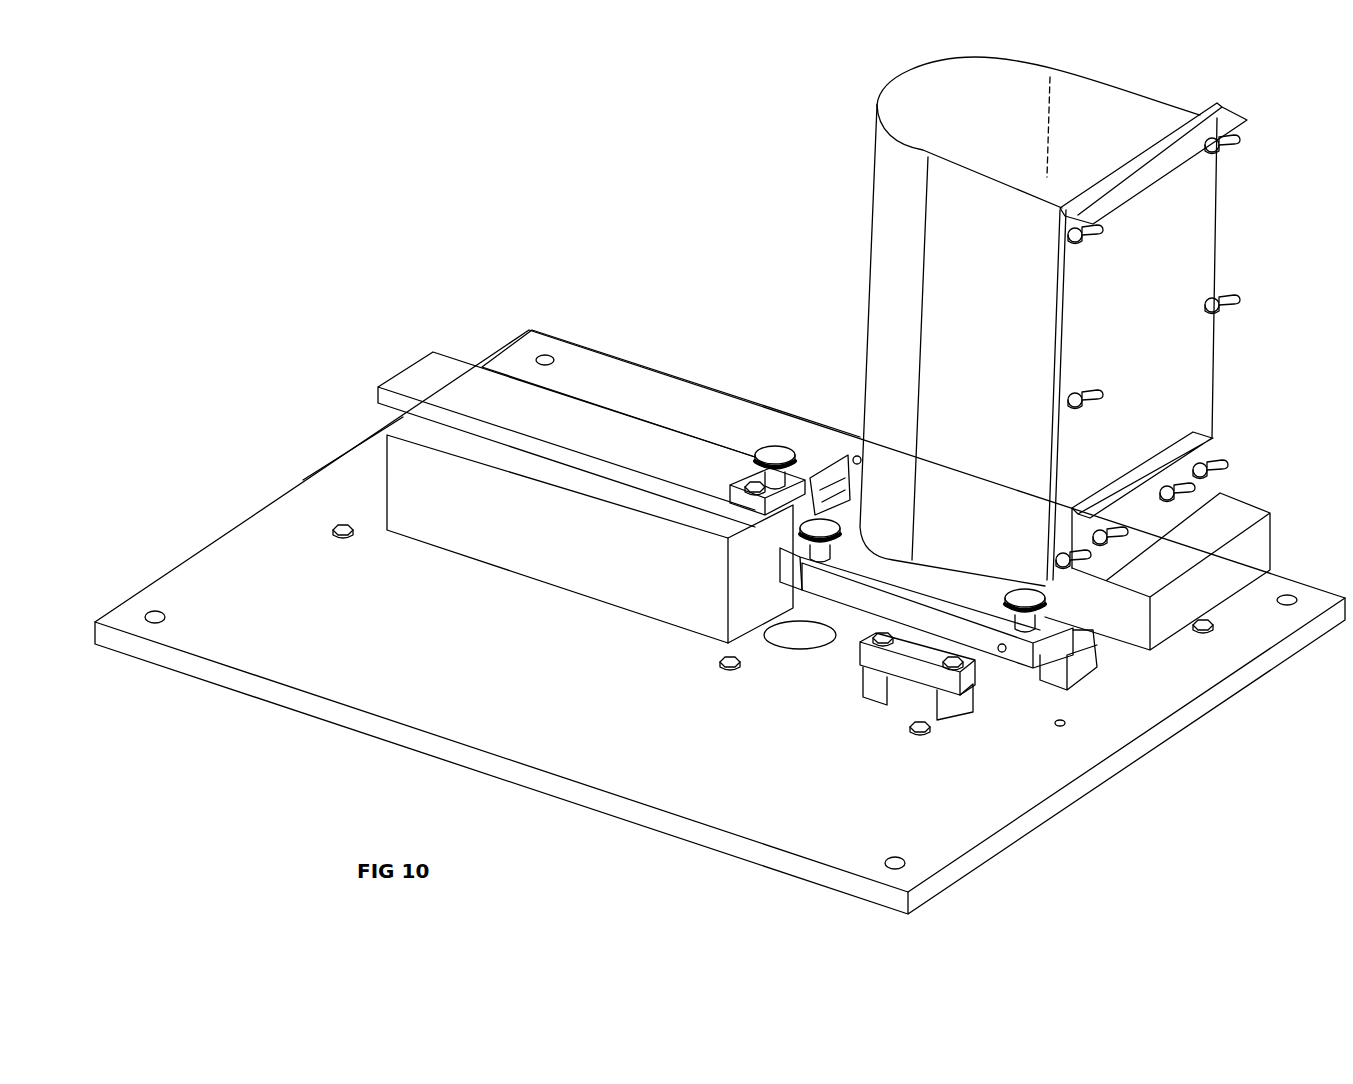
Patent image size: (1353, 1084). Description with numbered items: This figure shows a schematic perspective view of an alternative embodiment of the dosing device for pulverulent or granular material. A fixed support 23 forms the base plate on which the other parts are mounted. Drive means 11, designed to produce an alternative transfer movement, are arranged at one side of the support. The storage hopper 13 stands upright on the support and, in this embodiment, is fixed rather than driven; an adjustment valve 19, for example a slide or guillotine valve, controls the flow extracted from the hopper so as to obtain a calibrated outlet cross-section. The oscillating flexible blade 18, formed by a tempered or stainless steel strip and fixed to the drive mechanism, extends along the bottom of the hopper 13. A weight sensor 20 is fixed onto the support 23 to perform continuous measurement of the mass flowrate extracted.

The drive means 11 is at (485, 538).
The storage hopper 13 is at (907, 266).
The flexible blade 18 is at (820, 460).
The adjustment valve 19 is at (1153, 515).
The weight sensor 20 is at (1077, 663).
The fixed support 23 is at (743, 810).